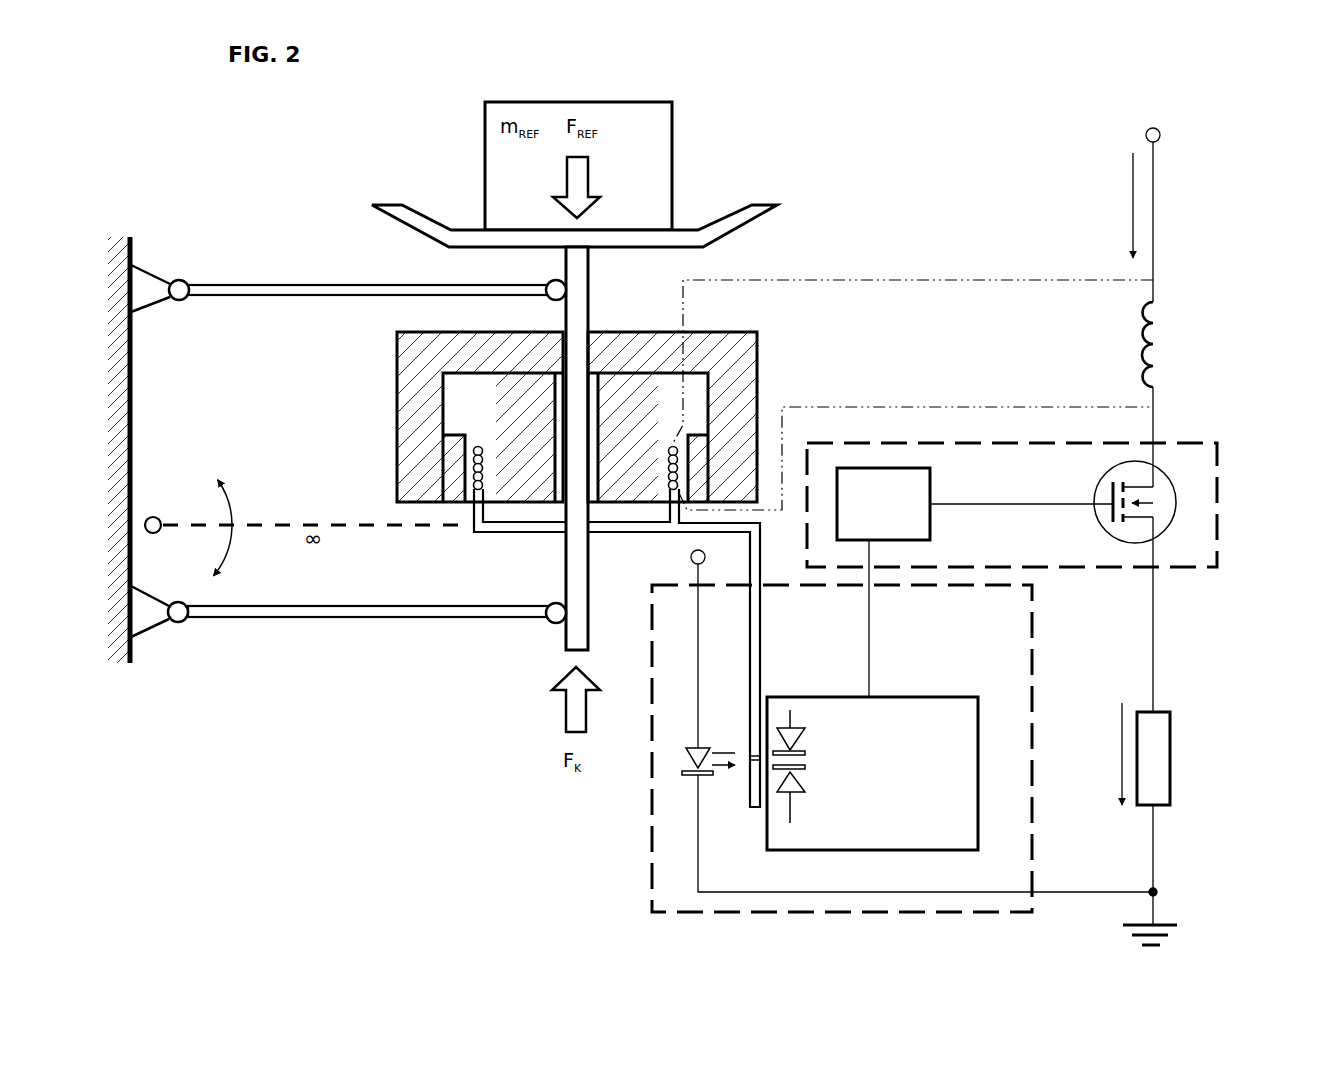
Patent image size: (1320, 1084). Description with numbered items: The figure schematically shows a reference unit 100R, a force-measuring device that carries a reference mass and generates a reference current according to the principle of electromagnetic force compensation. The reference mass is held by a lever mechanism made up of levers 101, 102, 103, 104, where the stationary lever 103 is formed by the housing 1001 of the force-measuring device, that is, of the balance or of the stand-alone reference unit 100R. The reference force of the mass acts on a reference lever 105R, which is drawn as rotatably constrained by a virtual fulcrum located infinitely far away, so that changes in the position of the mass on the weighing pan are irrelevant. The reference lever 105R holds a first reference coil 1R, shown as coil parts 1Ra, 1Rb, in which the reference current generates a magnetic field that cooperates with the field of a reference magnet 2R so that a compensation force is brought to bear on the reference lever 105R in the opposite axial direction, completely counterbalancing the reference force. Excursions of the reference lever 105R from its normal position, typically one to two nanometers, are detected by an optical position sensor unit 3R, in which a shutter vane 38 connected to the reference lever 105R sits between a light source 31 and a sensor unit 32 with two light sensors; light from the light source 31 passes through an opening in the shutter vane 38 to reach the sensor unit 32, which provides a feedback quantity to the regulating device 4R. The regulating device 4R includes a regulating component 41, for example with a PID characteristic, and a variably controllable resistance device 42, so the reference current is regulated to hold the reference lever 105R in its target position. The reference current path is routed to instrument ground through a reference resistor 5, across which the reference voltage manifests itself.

The stationary lever 103 is at (133, 255).
The housing 1001 is at (139, 450).
The lever mechanism member 101 is at (300, 292).
The lever mechanism member 102 is at (297, 620).
The lever mechanism member 104 is at (577, 300).
The reference magnet 2R is at (386, 453).
The first reference coil 1R is at (476, 486).
The reference coil part 1Ra is at (478, 468).
The reference coil part 1Rb is at (673, 468).
The reference lever 105R is at (508, 528).
The reference unit 100R is at (1180, 218).
The regulating device 4R is at (1012, 505).
The regulating component 41 is at (883, 504).
The variably controllable resistance device 42 is at (1117, 502).
The optical position sensor unit 3R is at (902, 730).
The light source 31 is at (695, 746).
The shutter vane 38 is at (739, 753).
The sensor unit 32 is at (872, 773).
The reference resistor 5 is at (1165, 758).